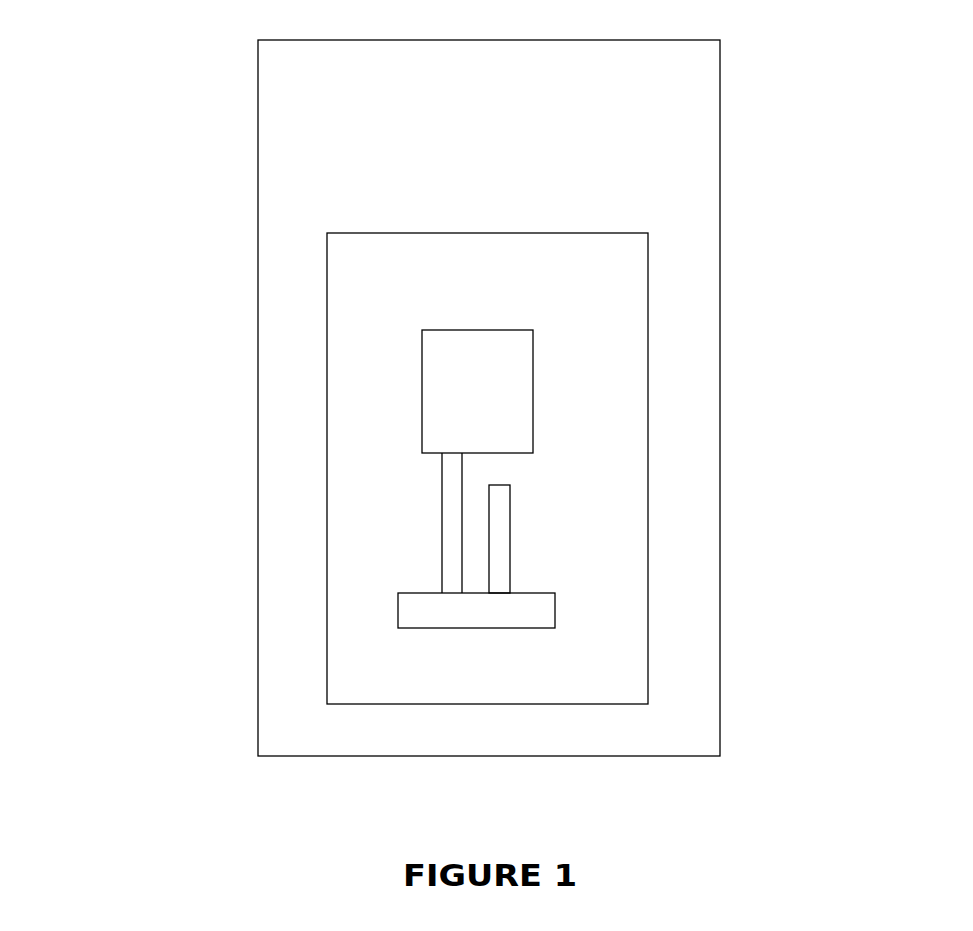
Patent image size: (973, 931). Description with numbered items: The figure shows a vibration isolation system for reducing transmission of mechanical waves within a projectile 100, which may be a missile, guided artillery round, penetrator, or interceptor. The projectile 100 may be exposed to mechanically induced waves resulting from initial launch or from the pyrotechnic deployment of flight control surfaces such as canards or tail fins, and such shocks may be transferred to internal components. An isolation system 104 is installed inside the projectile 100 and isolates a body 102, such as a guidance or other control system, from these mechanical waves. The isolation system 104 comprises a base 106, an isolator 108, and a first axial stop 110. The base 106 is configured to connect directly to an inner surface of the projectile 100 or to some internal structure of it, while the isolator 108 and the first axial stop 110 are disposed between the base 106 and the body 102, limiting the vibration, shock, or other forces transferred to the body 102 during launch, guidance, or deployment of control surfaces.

The projectile 100 is at (268, 117).
The body 102 is at (503, 388).
The isolation system 104 is at (327, 404).
The base 106 is at (420, 614).
The isolator 108 is at (450, 530).
The first axial stop 110 is at (500, 569).